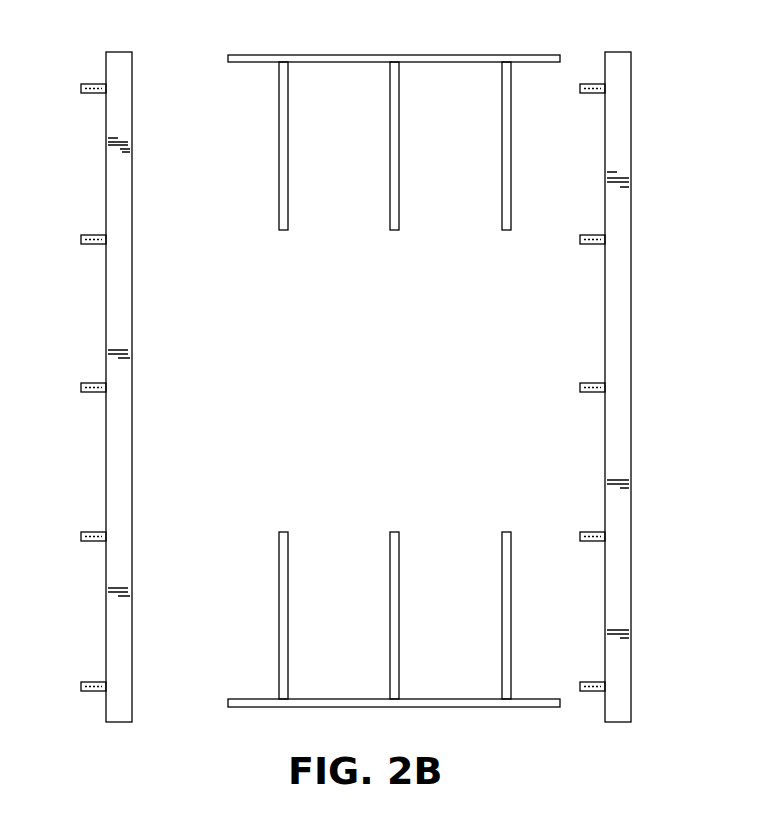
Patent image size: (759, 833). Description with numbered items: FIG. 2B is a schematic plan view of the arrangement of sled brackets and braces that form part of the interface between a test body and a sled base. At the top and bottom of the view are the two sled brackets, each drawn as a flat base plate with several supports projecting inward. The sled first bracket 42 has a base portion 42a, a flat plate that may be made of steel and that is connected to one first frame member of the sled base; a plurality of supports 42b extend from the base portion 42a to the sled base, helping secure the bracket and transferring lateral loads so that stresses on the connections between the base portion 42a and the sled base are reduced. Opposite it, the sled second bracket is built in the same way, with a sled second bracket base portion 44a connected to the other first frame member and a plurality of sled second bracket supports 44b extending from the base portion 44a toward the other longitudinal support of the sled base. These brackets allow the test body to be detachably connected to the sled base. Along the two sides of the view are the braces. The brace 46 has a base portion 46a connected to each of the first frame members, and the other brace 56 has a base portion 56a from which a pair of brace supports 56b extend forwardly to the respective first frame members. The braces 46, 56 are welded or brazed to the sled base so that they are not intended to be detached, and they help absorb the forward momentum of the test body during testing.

The sled first bracket 42 is at (284, 421).
The base portion 42a is at (262, 708).
The supports 42b is at (100, 239).
The sled second bracket base portion 44a is at (375, 54).
The sled second bracket supports 44b is at (502, 167).
The brace 46 is at (102, 56).
The base portion 46a is at (118, 168).
The brace 56 is at (634, 92).
The base portion 56a is at (616, 135).
The brace supports 56b is at (596, 384).